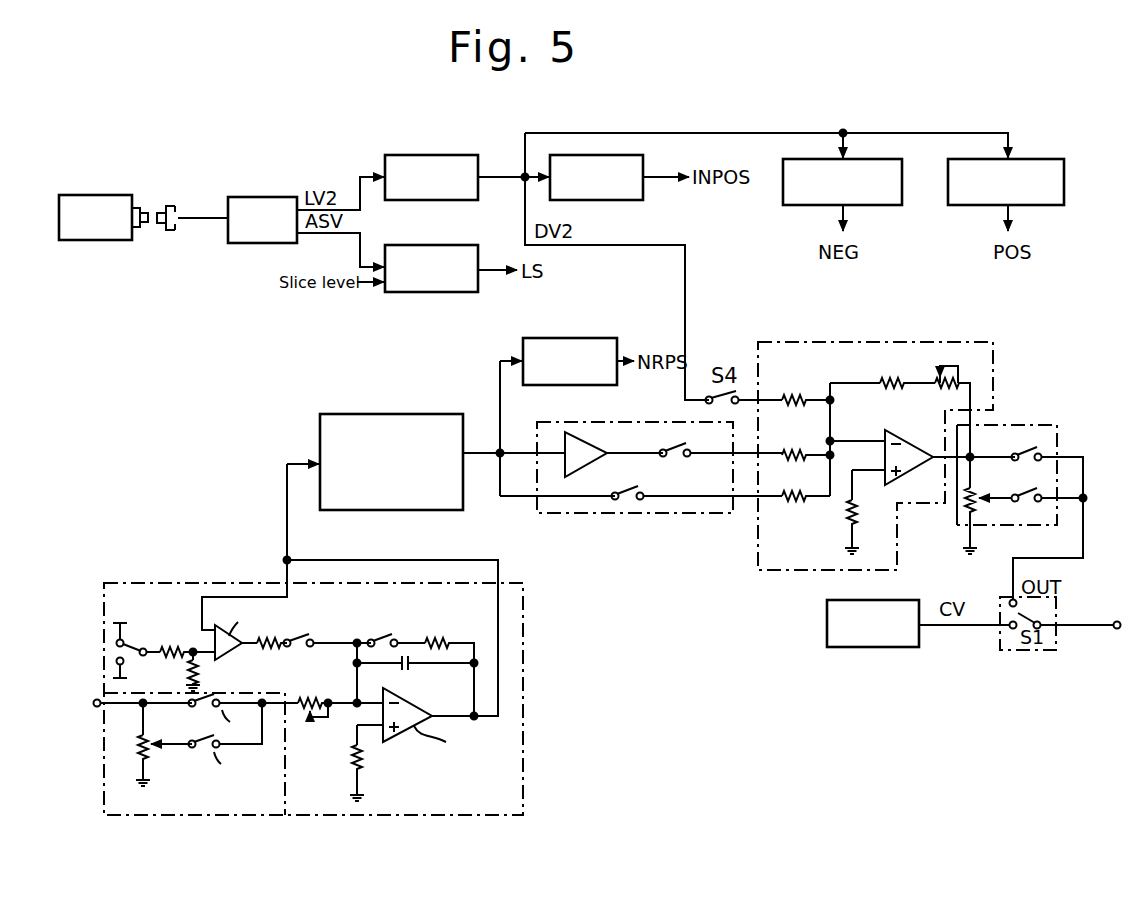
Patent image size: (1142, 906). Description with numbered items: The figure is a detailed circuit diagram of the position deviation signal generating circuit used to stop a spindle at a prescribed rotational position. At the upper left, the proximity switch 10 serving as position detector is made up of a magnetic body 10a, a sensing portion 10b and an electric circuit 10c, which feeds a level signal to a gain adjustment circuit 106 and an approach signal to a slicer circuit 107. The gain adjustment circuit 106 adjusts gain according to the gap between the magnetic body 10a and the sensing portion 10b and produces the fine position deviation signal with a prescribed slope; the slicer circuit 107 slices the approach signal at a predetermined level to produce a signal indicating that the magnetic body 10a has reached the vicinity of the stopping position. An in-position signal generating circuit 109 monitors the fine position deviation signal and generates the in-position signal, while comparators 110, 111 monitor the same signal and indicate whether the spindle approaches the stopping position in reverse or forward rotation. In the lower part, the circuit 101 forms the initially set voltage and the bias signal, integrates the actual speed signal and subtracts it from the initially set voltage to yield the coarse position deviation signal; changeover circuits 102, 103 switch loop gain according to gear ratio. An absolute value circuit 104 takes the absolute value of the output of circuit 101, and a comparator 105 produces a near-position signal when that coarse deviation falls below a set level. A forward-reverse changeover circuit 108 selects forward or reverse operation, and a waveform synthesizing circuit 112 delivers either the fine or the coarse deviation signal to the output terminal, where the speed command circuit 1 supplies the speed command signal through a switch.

The speed command circuit 1 is at (866, 642).
The proximity switch 10 is at (166, 196).
The magnetic body 10a is at (143, 228).
The sensing portion 10b is at (175, 236).
The electric circuit 10c is at (250, 235).
The circuit 101 is at (526, 753).
The changeover circuit 102 is at (258, 800).
The changeover circuit 103 is at (953, 522).
The absolute value circuit 104 is at (420, 502).
The comparator 105 is at (565, 349).
The gain adjustment circuit 106 is at (410, 160).
The slicer circuit 107 is at (430, 284).
The forward-reverse changeover circuit 108 is at (578, 516).
The in-position signal generating circuit 109 is at (605, 170).
The comparator 110 is at (855, 170).
The comparator 111 is at (965, 197).
The waveform synthesizing circuit 112 is at (880, 350).